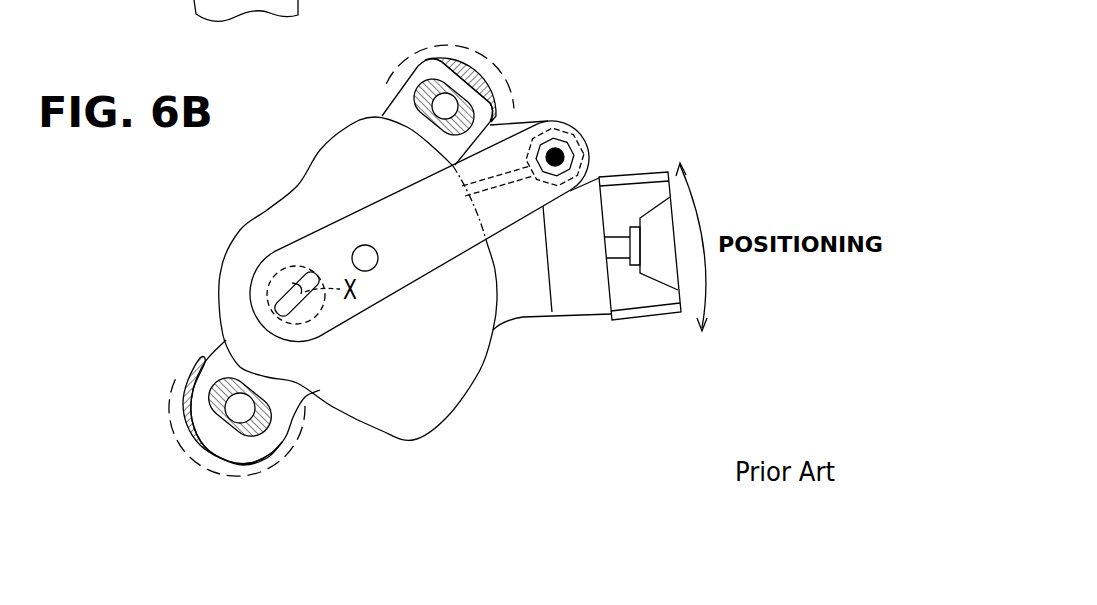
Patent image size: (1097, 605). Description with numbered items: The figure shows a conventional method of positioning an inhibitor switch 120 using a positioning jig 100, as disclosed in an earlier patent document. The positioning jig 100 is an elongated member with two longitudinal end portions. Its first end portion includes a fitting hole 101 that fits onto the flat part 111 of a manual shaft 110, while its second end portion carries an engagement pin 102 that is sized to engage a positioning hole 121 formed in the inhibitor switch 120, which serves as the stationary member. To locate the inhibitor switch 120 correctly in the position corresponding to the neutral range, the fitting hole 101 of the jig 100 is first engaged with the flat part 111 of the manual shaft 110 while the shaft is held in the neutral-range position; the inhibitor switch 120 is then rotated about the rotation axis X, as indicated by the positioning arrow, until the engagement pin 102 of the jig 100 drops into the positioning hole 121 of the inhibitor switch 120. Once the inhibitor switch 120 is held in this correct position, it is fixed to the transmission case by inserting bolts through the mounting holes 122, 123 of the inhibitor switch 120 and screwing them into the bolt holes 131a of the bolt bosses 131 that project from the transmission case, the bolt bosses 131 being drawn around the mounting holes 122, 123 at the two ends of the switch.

The positioning jig 100 is at (405, 185).
The fitting hole 101 is at (288, 290).
The engagement pin 102 is at (559, 142).
The manual shaft 110 is at (326, 314).
The flat part 111 is at (288, 293).
The inhibitor switch 120 is at (510, 339).
The positioning hole 121 is at (568, 139).
The mounting hole 122 is at (268, 423).
The mounting hole 123 is at (424, 96).
The bolt boss 131 is at (482, 62).
The bolt hole 131a is at (436, 58).